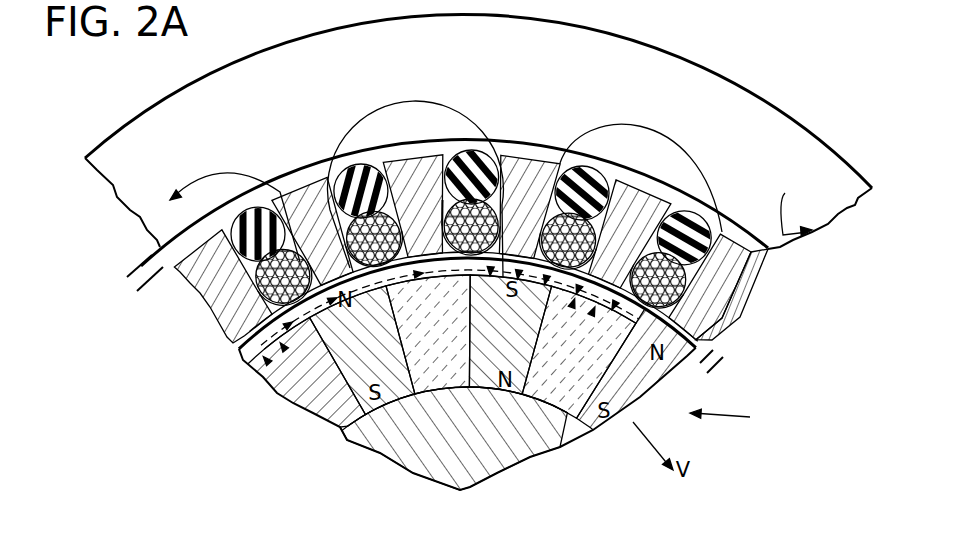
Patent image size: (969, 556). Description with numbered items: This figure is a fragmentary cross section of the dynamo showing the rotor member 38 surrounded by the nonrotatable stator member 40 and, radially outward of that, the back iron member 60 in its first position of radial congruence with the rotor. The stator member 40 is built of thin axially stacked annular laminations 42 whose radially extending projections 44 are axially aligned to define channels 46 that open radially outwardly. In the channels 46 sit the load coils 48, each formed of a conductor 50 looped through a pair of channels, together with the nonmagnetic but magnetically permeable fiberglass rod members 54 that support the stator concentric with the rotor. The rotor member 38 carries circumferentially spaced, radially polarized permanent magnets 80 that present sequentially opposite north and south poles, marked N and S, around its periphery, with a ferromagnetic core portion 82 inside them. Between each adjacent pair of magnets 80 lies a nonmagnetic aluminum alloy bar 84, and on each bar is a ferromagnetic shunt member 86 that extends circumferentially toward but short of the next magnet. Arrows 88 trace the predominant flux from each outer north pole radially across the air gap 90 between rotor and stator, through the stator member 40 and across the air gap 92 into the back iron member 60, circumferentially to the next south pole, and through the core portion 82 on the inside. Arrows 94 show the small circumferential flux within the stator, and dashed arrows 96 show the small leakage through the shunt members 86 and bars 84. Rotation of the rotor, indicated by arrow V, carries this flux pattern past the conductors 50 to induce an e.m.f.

The rotor member 38 is at (736, 415).
The stator member 40 is at (797, 103).
The laminations 42 is at (720, 293).
The projections 44 is at (293, 192).
The channels 46 is at (565, 162).
The load coils 48 is at (222, 300).
The conductor 50 is at (445, 210).
The rod members 54 is at (362, 185).
The back iron member 60 is at (692, 76).
The permanent magnets 80 is at (342, 346).
The core portion 82 is at (476, 487).
The aluminum alloy bars 84 is at (282, 391).
The shunt members 86 is at (233, 350).
The predominant magnetic flux arrows 88 is at (424, 100).
The air gap 90 is at (683, 392).
The air gap 92 is at (172, 300).
The circumferential stator flux arrows 94 is at (232, 287).
The leakage flux arrows 96 is at (260, 372).